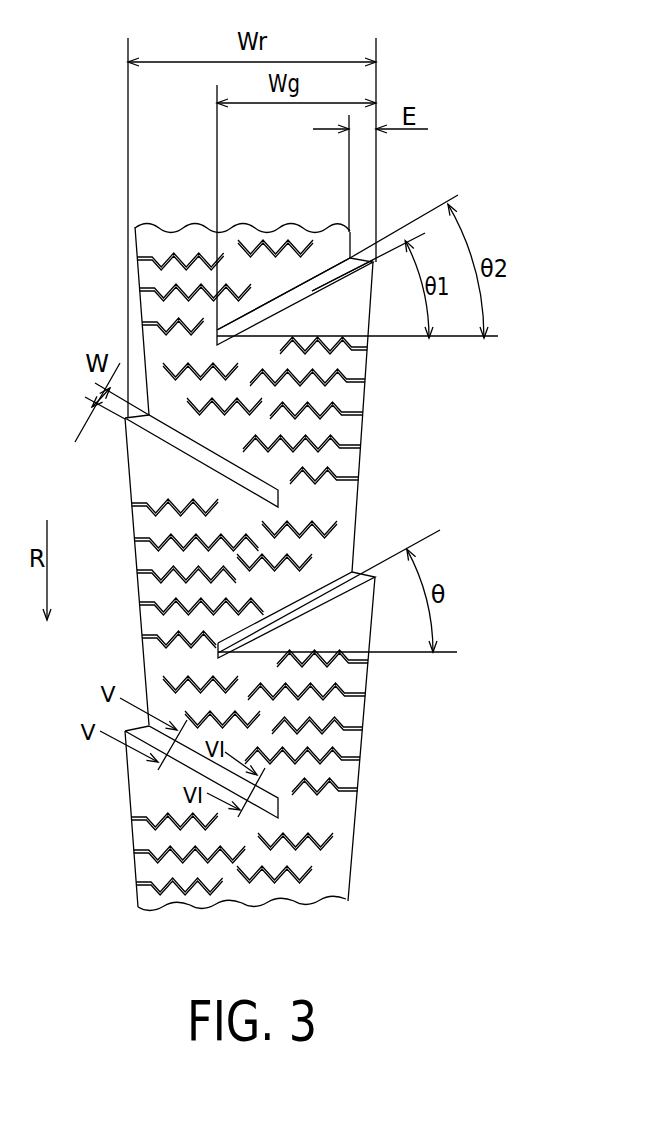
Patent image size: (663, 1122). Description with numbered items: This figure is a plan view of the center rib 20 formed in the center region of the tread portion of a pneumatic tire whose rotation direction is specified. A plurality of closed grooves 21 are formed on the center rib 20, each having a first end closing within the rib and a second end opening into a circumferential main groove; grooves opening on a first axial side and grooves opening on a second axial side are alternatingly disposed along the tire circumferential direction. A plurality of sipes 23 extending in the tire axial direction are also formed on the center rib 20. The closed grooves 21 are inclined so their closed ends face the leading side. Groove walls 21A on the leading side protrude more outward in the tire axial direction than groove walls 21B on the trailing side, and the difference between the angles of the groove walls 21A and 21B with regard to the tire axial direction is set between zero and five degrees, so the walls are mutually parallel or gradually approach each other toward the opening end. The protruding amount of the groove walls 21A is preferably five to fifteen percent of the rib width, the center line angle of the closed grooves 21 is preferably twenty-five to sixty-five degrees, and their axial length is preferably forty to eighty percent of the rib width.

The center rib 20 is at (243, 226).
The closed groove 21 is at (336, 258).
The groove wall on the leading side 21A is at (337, 275).
The groove wall on the trailing side 21B is at (280, 295).
The sipe 23 is at (184, 227).